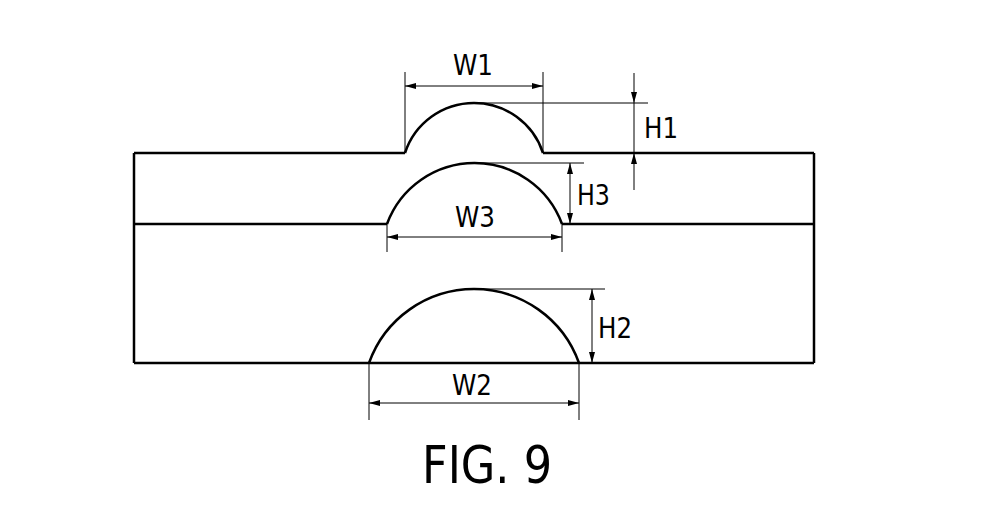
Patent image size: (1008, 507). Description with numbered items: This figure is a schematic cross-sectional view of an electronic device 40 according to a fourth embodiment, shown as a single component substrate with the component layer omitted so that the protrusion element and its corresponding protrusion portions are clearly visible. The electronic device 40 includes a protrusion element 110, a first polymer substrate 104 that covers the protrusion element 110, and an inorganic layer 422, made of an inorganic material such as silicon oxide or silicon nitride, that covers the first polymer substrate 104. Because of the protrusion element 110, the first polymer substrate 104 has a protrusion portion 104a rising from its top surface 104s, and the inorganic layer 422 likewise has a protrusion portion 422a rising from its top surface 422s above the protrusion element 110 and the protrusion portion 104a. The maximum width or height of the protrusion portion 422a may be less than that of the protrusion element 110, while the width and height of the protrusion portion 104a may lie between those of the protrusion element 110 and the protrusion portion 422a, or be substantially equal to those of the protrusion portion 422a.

The electronic device 40 is at (775, 84).
The inorganic layer 422 is at (792, 197).
The top surface of the inorganic layer 422s is at (163, 152).
The protrusion portion of the inorganic layer 422a is at (428, 152).
The first polymer substrate 104 is at (792, 300).
The top surface of the first polymer substrate 104s is at (160, 224).
The protrusion portion of the first polymer substrate 104a is at (415, 207).
The protrusion element 110 is at (418, 330).